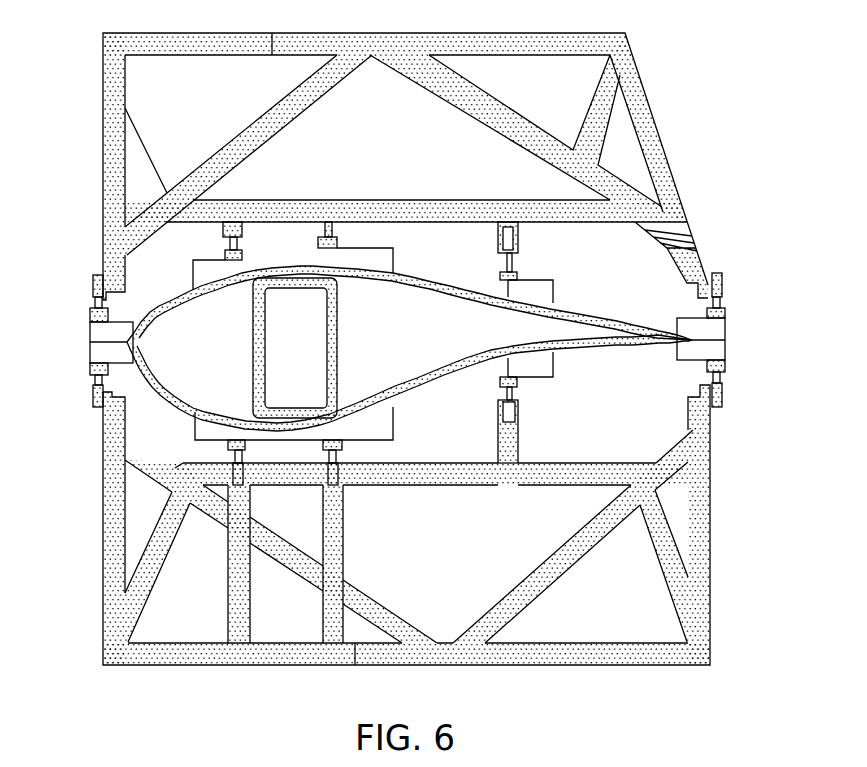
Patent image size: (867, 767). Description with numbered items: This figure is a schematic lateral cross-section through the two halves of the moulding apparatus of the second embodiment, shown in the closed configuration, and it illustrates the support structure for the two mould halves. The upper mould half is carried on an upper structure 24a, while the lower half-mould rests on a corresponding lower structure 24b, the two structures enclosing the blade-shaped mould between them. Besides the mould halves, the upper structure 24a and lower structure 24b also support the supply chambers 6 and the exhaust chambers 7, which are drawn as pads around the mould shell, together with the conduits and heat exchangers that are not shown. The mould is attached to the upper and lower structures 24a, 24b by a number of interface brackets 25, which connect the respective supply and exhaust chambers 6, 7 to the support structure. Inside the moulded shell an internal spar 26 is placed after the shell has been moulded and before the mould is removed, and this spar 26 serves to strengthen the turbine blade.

The supply chamber 6 is at (547, 278).
The exhaust chamber 7 is at (393, 267).
The upper structure 24a is at (277, 107).
The lower structure 24b is at (368, 625).
The interface bracket 25 is at (330, 230).
The internal spar 26 is at (253, 330).